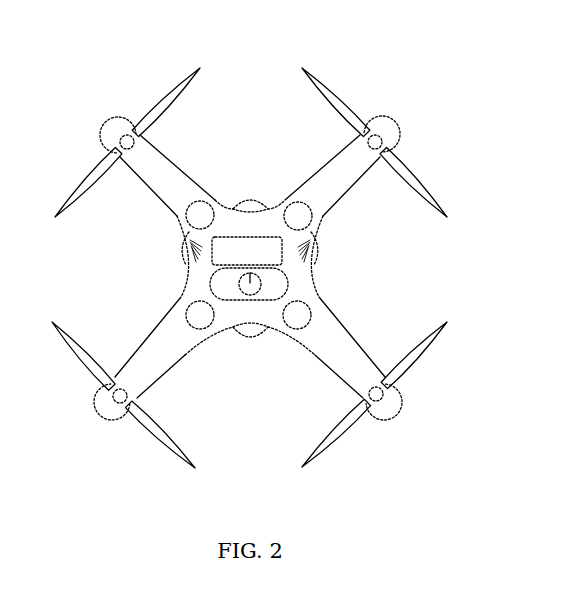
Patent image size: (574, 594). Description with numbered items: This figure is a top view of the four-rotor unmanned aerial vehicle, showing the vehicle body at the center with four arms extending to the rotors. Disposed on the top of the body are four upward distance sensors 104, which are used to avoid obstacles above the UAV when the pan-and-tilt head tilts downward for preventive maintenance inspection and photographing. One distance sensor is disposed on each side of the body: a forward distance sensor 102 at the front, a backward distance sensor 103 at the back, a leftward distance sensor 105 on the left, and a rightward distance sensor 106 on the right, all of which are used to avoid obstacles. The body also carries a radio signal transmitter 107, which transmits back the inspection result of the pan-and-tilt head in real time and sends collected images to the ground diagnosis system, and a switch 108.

The forward distance sensor 102 is at (250, 190).
The backward distance sensor 103 is at (250, 343).
The upward distance sensors 104 is at (183, 219).
The leftward distance sensor 105 is at (172, 277).
The rightward distance sensor 106 is at (323, 258).
The radio signal transmitter 107 is at (188, 241).
The switch 108 is at (289, 283).